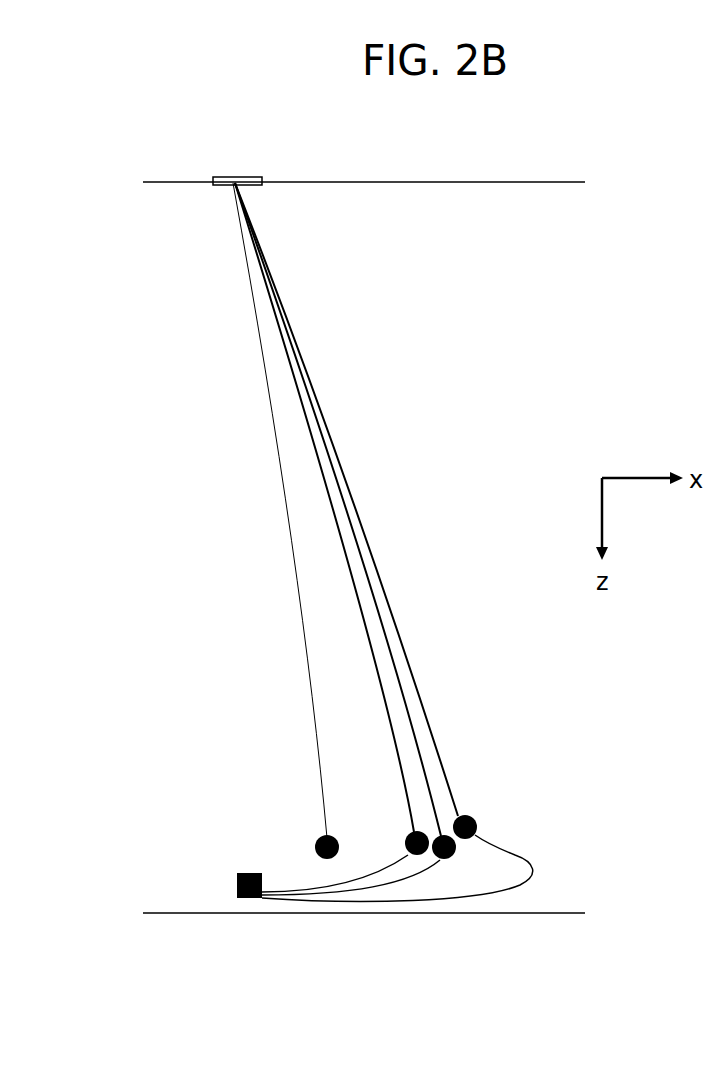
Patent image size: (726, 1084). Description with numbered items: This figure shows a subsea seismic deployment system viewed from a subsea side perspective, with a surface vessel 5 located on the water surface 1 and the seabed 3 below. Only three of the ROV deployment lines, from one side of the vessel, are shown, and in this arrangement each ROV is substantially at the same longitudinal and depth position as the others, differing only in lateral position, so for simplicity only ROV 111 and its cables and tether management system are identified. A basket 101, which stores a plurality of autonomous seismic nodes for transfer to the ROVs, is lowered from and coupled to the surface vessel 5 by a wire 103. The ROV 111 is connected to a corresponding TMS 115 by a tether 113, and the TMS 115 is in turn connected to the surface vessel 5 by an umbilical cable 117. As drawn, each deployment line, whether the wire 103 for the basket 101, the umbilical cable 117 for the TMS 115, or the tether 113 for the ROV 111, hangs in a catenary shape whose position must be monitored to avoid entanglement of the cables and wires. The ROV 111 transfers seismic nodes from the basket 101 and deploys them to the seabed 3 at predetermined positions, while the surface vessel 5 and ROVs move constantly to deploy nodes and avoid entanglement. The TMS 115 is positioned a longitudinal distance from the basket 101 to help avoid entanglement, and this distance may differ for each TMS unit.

The water surface 1 is at (433, 187).
The seabed 3 is at (582, 910).
The surface vessel 5 is at (265, 186).
The basket 101 is at (323, 835).
The wire 103 is at (297, 647).
The ROV 111 is at (243, 868).
The tether 113 is at (510, 857).
The TMS 115 is at (458, 820).
The umbilical cable 117 is at (437, 743).